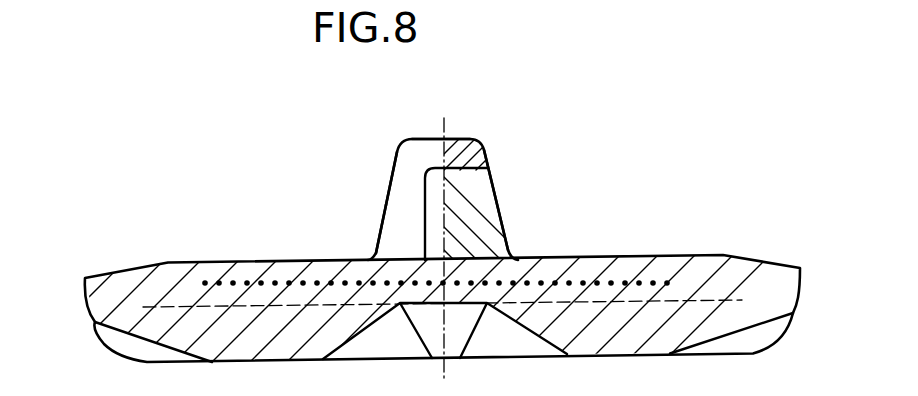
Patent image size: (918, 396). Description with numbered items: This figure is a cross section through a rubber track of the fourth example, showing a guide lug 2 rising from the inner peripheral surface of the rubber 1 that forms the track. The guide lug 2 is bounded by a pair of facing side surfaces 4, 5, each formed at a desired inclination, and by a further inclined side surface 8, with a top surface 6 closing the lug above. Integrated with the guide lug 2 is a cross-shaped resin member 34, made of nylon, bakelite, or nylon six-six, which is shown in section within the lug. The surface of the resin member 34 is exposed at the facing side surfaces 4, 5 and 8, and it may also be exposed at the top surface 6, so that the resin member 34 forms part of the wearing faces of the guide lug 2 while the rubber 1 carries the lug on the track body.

The rubber 1 is at (735, 265).
The guide lug 2 is at (492, 139).
The resin member 34 is at (482, 195).
The side surface 4 is at (382, 222).
The side surface 5 is at (502, 232).
The top surface 6 is at (420, 138).
The side surface 8 is at (405, 200).